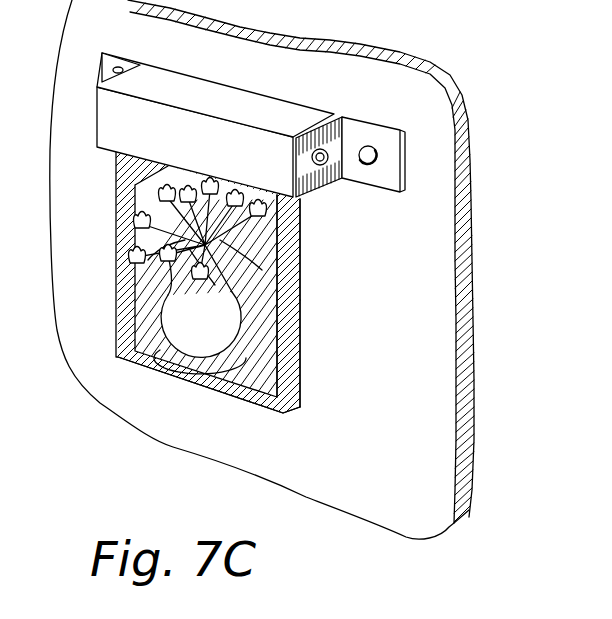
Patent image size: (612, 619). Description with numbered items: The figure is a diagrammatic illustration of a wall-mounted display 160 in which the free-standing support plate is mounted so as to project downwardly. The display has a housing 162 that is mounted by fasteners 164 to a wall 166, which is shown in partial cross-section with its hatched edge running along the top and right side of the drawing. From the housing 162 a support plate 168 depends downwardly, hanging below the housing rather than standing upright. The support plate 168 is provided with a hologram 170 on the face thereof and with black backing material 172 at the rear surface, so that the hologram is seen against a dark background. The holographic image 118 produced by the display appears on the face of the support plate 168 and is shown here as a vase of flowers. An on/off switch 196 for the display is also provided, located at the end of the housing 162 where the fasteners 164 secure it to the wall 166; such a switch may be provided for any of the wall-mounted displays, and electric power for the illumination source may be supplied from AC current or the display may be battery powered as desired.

The wall-mounted display 160 is at (419, 110).
The housing 162 is at (233, 93).
The fasteners 164 is at (128, 68).
The on/off switch 196 is at (320, 128).
The wall 166 is at (391, 481).
The support plate 168 is at (292, 292).
The hologram 170 is at (283, 415).
The black backing material 172 is at (298, 242).
The holographic image 118 is at (175, 328).